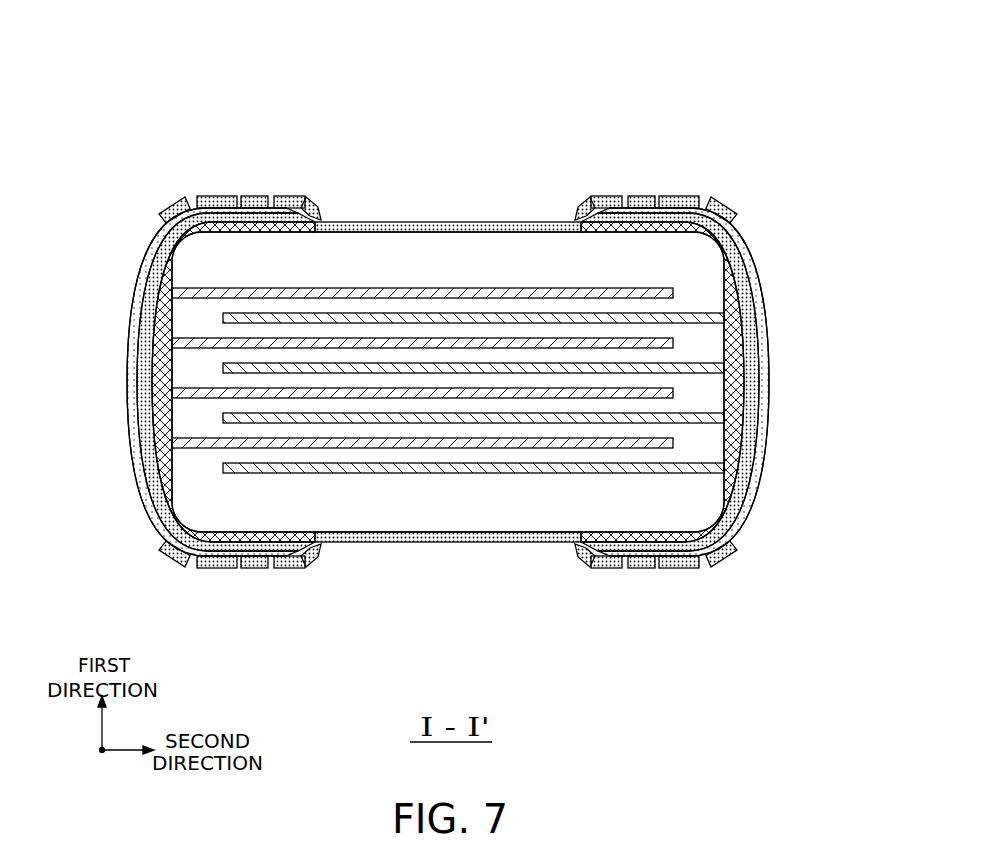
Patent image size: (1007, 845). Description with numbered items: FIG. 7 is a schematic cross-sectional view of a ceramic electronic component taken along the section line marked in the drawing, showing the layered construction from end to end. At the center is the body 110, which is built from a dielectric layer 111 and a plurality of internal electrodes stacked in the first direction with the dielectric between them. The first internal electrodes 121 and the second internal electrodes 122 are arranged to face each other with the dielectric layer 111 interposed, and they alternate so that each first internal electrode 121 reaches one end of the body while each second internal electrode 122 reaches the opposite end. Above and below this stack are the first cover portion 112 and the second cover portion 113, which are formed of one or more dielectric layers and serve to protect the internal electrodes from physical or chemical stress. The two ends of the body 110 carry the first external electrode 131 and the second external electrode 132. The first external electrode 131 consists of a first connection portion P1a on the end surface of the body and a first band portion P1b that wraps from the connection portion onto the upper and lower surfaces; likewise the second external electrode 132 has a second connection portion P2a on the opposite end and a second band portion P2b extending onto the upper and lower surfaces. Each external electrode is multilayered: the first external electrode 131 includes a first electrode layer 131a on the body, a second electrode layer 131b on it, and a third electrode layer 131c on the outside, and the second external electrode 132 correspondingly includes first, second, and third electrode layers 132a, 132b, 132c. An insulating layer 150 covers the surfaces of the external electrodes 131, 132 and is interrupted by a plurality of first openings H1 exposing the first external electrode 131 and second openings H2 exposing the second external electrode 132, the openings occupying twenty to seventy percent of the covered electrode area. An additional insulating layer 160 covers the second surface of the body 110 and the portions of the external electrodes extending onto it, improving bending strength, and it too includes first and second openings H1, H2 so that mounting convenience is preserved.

The body 110 is at (448, 371).
The dielectric layer 111 is at (462, 260).
The first cover portion 112 is at (315, 257).
The second cover portion 113 is at (399, 520).
The first internal electrode 121 is at (357, 260).
The second internal electrode 122 is at (410, 260).
The first external electrode 131 is at (178, 334).
The first electrode layer of first external electrode 131a is at (165, 357).
The second electrode layer of first external electrode 131b is at (145, 384).
The third electrode layer of first external electrode 131c is at (128, 410).
The second external electrode 132 is at (718, 334).
The first electrode layer of second external electrode 132a is at (737, 356).
The second electrode layer of second external electrode 132b is at (752, 385).
The third electrode layer of second external electrode 132c is at (768, 410).
The insulating layer 150 is at (512, 532).
The additional insulating layer 160 is at (518, 222).
The first opening H1 is at (233, 197).
The second opening H2 is at (662, 197).
The first connection portion P1a is at (126, 441).
The first band portion P1b is at (251, 190).
The second connection portion P2a is at (770, 441).
The second band portion P2b is at (646, 190).